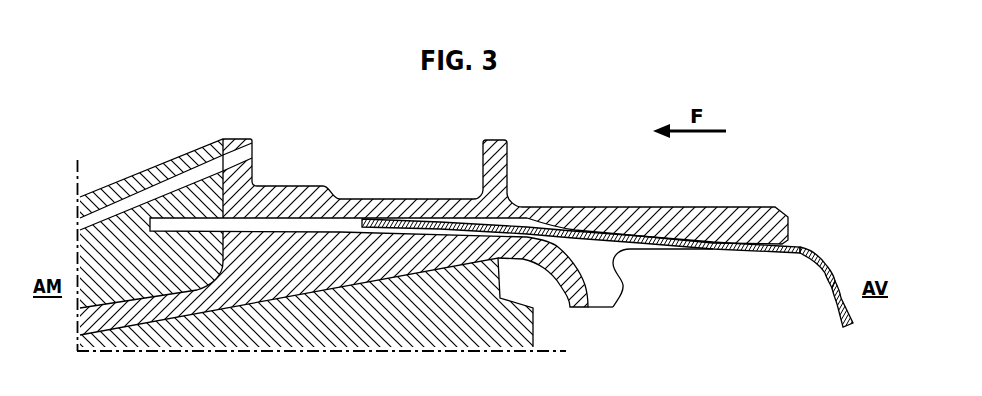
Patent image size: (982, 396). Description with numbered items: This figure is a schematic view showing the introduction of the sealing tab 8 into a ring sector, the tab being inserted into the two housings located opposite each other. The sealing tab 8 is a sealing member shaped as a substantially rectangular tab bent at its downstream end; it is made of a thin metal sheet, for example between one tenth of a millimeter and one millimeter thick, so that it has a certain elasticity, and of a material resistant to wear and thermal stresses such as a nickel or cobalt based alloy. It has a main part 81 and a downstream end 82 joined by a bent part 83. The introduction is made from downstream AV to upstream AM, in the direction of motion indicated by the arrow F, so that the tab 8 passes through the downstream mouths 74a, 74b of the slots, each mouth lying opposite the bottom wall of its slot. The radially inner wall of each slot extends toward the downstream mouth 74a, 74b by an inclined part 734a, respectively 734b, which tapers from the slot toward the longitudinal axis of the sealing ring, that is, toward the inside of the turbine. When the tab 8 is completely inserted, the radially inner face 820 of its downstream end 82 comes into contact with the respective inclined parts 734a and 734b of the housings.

The inclined part 734a is at (381, 250).
The inclined part 734b is at (582, 262).
The downstream mouth 74a is at (675, 278).
The downstream mouth 74b is at (632, 276).
The main part 81 is at (611, 238).
The sealing tab 8 is at (620, 278).
The bent part 83 is at (828, 263).
The downstream end 82 is at (830, 296).
The radially inner face 820 is at (825, 293).